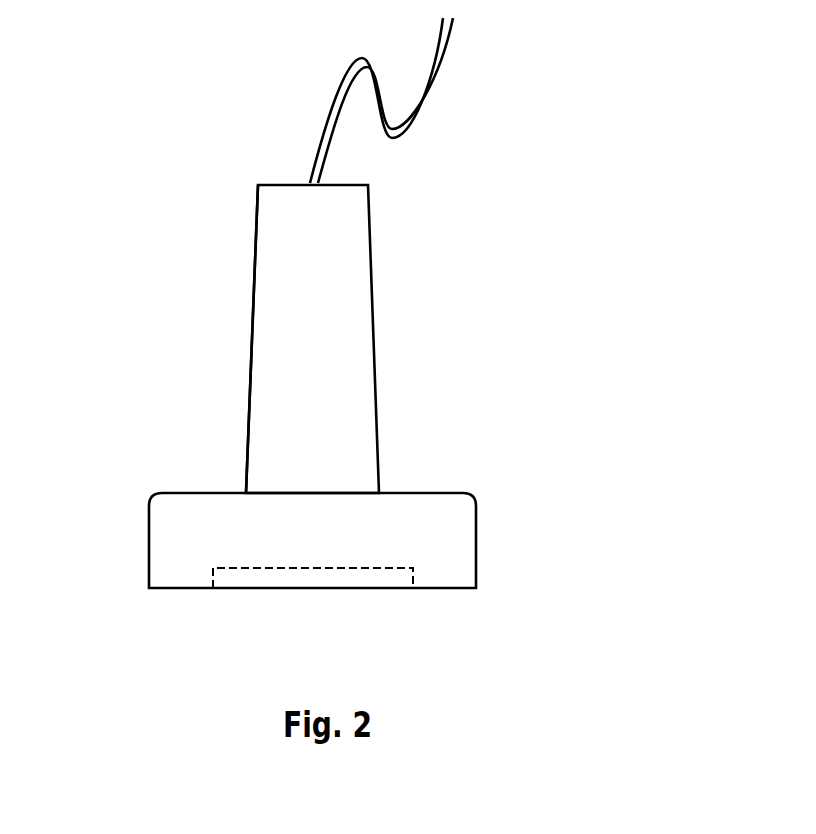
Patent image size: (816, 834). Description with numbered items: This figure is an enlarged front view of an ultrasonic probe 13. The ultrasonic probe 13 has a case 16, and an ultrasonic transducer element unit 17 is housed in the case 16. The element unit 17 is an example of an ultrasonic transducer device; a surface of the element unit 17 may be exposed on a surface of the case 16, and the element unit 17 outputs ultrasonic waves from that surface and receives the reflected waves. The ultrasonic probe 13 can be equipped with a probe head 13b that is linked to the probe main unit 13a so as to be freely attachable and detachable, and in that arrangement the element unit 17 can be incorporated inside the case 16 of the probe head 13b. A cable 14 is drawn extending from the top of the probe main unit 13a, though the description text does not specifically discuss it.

The ultrasonic probe 13 is at (284, 336).
The probe main unit 13a is at (255, 265).
The probe head 13b is at (148, 543).
The cable 14 is at (450, 60).
The case 16 is at (377, 323).
The ultrasonic transducer element unit 17 is at (313, 580).